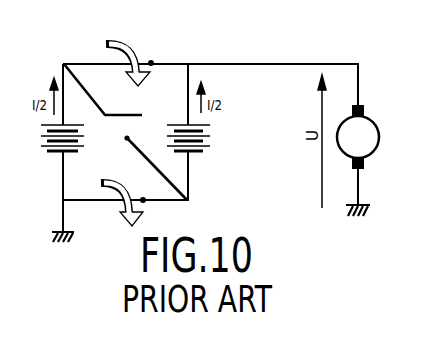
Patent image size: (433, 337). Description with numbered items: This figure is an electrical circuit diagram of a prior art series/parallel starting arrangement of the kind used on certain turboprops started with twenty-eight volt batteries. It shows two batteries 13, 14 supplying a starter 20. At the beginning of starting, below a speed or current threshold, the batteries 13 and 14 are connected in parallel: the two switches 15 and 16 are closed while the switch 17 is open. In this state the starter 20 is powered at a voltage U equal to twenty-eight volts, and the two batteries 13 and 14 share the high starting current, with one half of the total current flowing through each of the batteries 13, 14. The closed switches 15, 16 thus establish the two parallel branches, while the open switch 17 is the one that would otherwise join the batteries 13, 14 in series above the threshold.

The battery 13 is at (48, 151).
The battery 14 is at (207, 151).
The switch 15 is at (146, 60).
The switch 16 is at (112, 201).
The switch 17 is at (141, 113).
The starter 20 is at (369, 118).